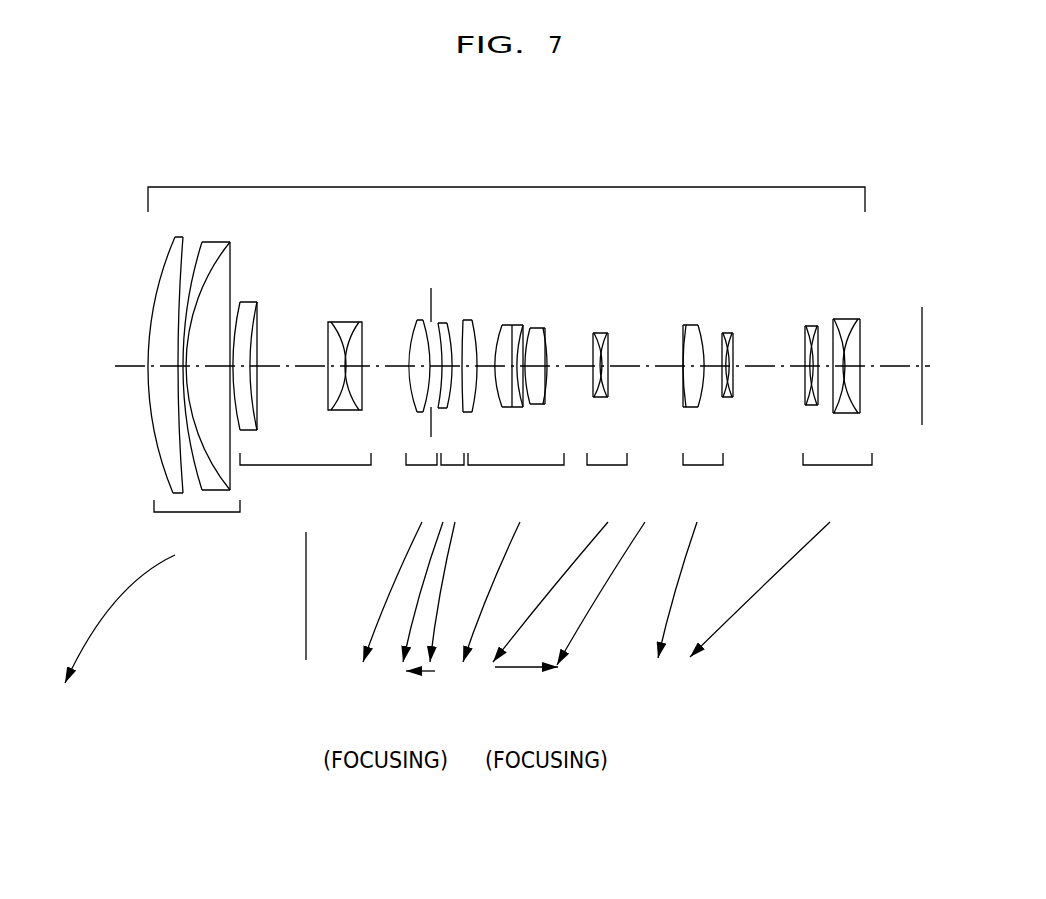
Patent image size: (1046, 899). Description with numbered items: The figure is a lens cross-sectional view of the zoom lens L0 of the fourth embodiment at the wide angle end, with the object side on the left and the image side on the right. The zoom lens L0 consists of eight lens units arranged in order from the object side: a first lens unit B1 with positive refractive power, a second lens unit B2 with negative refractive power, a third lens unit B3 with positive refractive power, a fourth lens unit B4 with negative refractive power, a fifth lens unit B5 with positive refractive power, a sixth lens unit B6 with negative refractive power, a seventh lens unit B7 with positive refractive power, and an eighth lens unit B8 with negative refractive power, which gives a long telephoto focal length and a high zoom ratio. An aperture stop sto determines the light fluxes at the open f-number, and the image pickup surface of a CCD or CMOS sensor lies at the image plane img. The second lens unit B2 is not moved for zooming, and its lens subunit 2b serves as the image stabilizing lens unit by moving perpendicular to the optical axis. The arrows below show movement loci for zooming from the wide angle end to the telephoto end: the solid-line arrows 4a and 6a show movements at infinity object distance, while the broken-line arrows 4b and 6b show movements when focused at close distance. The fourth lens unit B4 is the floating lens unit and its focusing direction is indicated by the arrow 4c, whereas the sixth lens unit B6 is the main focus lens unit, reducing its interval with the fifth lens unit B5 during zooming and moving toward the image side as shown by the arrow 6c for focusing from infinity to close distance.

The zoom lens L0 is at (506, 186).
The first lens unit B1 is at (161, 460).
The second lens unit B2 is at (306, 460).
The lens subunit 2b is at (372, 303).
The third lens unit B3 is at (400, 491).
The aperture stop sto is at (431, 292).
The fourth lens unit B4 is at (461, 414).
The solid-line arrow 4a is at (448, 594).
The broken-line arrow 4b is at (417, 634).
The arrow 4c is at (425, 671).
The fifth lens unit B5 is at (513, 493).
The sixth lens unit B6 is at (609, 420).
The solid-line arrow 6a is at (537, 622).
The broken-line arrow 6b is at (588, 620).
The arrow 6c is at (523, 667).
The seventh lens unit B7 is at (695, 491).
The eighth lens unit B8 is at (781, 488).
The image plane img is at (919, 318).